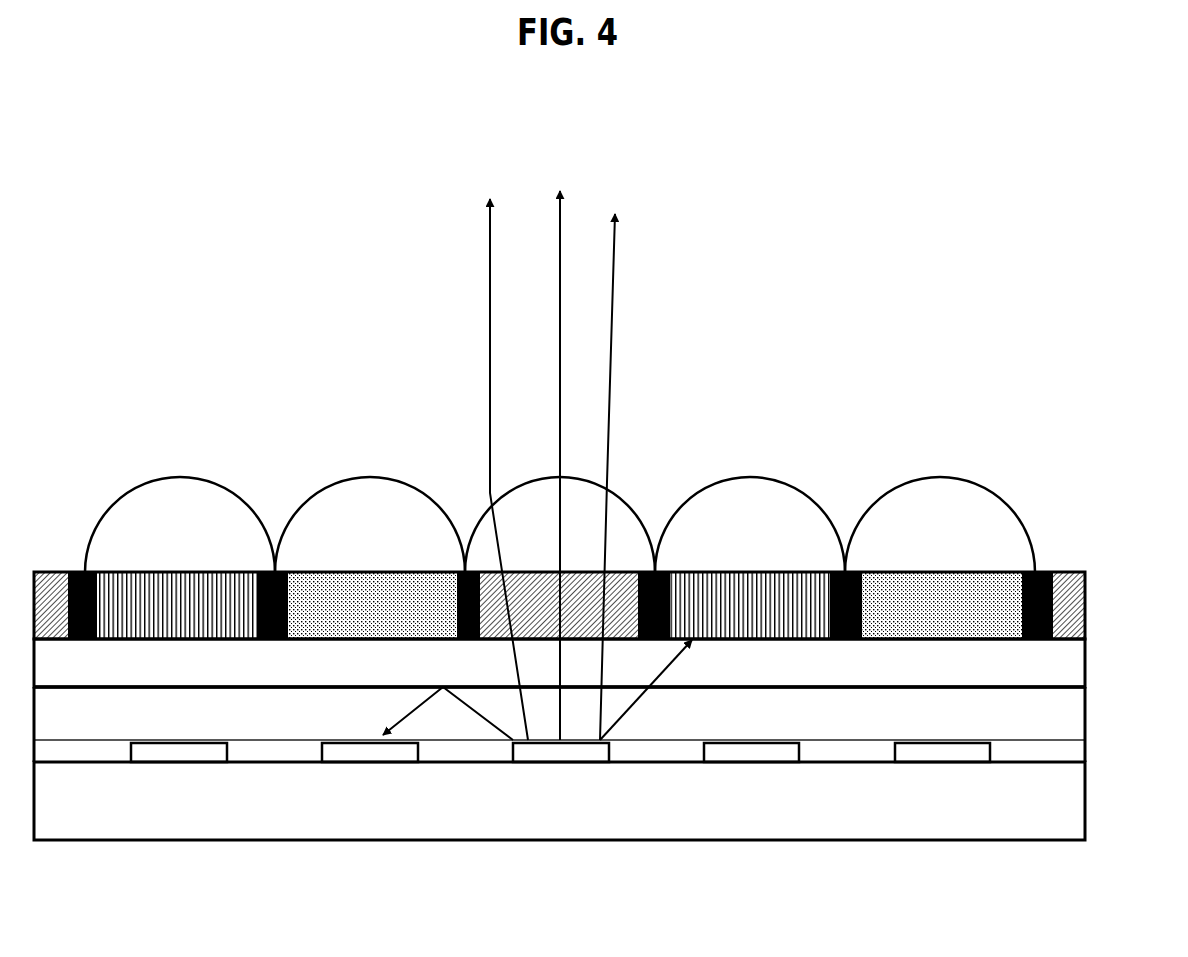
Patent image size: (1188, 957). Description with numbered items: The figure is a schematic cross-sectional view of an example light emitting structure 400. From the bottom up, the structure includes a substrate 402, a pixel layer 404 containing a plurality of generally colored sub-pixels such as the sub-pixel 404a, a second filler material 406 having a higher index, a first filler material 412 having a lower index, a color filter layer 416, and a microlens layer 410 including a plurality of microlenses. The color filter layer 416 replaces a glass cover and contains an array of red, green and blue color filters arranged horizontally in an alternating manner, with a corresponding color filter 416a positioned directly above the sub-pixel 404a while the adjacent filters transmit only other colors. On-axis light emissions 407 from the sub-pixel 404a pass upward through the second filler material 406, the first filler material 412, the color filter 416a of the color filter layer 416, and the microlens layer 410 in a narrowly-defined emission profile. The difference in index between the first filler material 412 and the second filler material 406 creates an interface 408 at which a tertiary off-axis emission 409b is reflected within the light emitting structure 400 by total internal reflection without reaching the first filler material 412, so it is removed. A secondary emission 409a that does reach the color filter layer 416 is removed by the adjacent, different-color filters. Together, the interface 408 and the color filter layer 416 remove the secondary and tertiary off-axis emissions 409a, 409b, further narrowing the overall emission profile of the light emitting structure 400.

The light emitting structure 400 is at (108, 288).
The substrate 402 is at (1057, 807).
The pixel layer 404 is at (274, 752).
The sub-pixel 404a is at (565, 754).
The second filler material 406 is at (1055, 727).
The on-axis light emissions 407 is at (638, 191).
The interface 408 is at (105, 688).
The secondary emission 409a is at (668, 661).
The tertiary off-axis emission 409b is at (437, 701).
The microlens layer 410 is at (984, 510).
The first filler material 412 is at (1053, 668).
The color filter layer 416 is at (1088, 596).
The color filter 416a is at (483, 572).